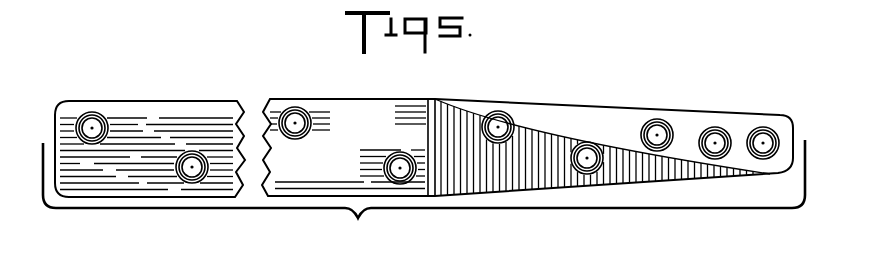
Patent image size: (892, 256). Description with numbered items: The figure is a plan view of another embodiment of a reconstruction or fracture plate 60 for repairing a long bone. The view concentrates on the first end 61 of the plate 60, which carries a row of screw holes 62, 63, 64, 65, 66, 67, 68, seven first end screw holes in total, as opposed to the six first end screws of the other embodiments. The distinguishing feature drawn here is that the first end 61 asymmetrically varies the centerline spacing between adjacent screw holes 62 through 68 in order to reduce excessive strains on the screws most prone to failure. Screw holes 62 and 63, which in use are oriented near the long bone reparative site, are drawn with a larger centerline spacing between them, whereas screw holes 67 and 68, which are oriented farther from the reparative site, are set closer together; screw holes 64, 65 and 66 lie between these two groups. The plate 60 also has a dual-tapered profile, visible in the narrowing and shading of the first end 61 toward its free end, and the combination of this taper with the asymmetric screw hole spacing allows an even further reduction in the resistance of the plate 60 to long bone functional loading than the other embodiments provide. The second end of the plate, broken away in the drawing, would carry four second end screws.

The plate 60 is at (216, 99).
The first end 61 is at (448, 99).
The screw hole 62 is at (296, 120).
The screw hole 63 is at (399, 164).
The screw hole 64 is at (500, 124).
The screw hole 65 is at (589, 155).
The screw hole 66 is at (659, 132).
The screw hole 67 is at (717, 140).
The screw hole 68 is at (765, 140).